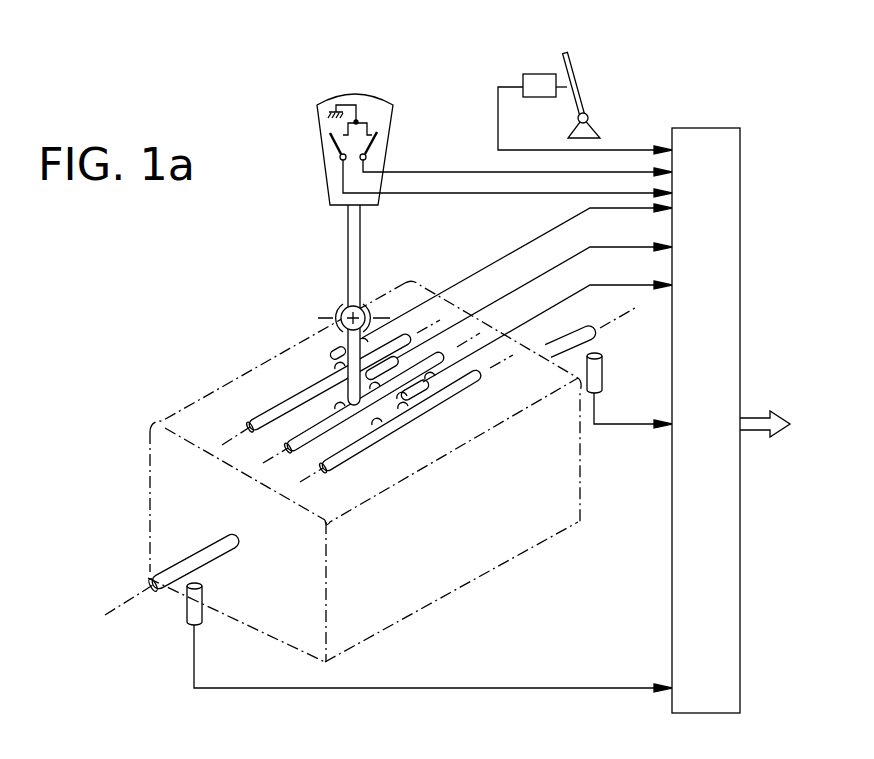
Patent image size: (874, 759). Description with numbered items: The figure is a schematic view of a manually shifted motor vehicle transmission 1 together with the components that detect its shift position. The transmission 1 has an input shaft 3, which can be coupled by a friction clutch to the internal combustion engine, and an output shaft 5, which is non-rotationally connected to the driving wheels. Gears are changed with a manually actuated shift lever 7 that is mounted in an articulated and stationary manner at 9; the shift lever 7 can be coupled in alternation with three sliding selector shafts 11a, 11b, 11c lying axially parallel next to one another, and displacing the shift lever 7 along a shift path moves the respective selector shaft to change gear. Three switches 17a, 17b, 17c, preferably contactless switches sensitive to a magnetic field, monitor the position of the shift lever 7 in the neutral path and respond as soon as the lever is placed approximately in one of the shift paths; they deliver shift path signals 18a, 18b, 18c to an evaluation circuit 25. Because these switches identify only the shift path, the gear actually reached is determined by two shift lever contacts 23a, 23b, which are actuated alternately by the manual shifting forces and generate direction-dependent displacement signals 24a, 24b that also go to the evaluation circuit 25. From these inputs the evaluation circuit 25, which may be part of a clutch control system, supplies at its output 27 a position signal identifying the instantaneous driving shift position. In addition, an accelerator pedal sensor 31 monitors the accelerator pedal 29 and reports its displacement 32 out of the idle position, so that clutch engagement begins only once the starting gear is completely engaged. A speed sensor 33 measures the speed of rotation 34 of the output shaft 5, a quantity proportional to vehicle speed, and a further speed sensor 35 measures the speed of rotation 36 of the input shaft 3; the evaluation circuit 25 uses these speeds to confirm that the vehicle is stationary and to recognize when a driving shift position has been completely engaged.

The transmission 1 is at (165, 418).
The input shaft 3 is at (208, 550).
The output shaft 5 is at (598, 335).
The shift lever 7 is at (348, 233).
The articulated stationary mounting 9 is at (342, 307).
The sliding selector shaft 11a is at (265, 420).
The sliding selector shaft 11b is at (300, 440).
The sliding selector shaft 11c is at (352, 455).
The switch 17a is at (338, 350).
The switch 17b is at (398, 360).
The switch 17c is at (423, 388).
The shift path signal 18a is at (552, 232).
The shift path signal 18b is at (570, 258).
The shift path signal 18c is at (570, 296).
The shift lever contact 23a is at (332, 148).
The shift lever contact 23b is at (375, 148).
The displacement signal 24a is at (482, 193).
The displacement signal 24b is at (510, 172).
The evaluation circuit 25 is at (720, 297).
The output 27 is at (752, 421).
The accelerator pedal 29 is at (572, 62).
The accelerator pedal sensor 31 is at (532, 74).
The displacement of the accelerator pedal 32 is at (636, 150).
The speed sensor 33 is at (598, 374).
The speed of rotation of the output shaft 34 is at (627, 424).
The speed sensor 35 is at (190, 616).
The speed of rotation of the input shaft 36 is at (625, 686).